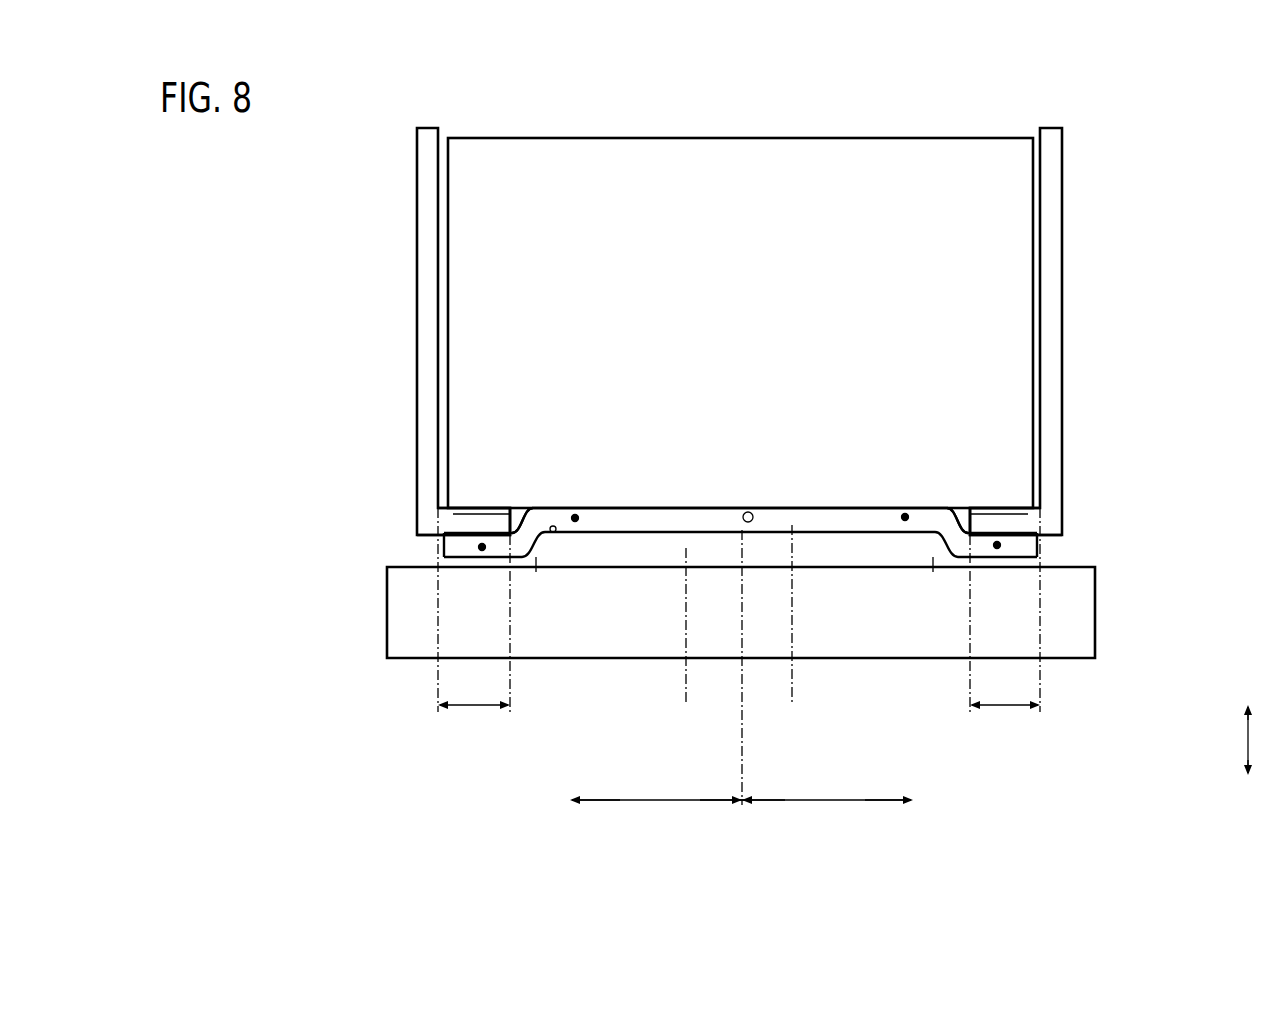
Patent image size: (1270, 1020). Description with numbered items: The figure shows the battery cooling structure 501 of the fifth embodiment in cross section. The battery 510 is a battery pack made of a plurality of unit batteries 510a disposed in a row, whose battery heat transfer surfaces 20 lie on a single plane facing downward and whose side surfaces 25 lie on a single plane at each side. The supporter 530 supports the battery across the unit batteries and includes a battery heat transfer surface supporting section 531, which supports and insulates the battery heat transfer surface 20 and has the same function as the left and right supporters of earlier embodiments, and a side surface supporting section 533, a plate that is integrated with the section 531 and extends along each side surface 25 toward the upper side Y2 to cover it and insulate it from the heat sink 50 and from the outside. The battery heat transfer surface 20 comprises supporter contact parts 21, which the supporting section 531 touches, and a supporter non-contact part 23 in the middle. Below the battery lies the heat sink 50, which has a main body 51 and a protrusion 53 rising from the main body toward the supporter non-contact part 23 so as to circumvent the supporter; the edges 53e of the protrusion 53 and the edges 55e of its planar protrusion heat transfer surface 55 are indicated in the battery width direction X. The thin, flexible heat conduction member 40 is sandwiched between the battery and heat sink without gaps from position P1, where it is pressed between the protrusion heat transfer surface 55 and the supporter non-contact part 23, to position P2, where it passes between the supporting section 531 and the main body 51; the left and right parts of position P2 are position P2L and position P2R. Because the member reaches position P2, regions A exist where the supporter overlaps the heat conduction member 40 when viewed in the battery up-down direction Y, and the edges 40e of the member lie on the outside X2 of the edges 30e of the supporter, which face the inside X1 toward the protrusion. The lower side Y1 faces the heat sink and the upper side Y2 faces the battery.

The battery cooling structure 501 is at (392, 148).
The battery 510 is at (631, 323).
The unit battery 510a is at (465, 228).
The supporter 530 is at (741, 344).
The side surface supporting section 533 is at (427, 378).
The battery heat transfer surface supporting section 531 is at (445, 528).
The side surface 25 is at (430, 300).
The battery heat transfer surface 20 is at (742, 469).
The supporter contact part 21 is at (478, 518).
The supporter non-contact part 23 is at (741, 508).
The heat conduction member 40 is at (625, 517).
The edge of heat conduction member 40e is at (444, 556).
The edge of supporter 30e is at (525, 508).
The position P1 is at (576, 514).
The position P2 is at (742, 483).
The position P2L is at (482, 543).
The position P2R is at (997, 541).
The heat sink 50 is at (400, 657).
The main body 51 is at (378, 615).
The protrusion 53 is at (739, 640).
The edge of protrusion 53e is at (536, 574).
The protrusion heat transfer surface 55 is at (738, 629).
The edge of protrusion heat transfer surface 55e is at (554, 534).
The region A is at (739, 621).
The battery width direction X is at (741, 680).
The inside X1 is at (742, 815).
The outside X2 is at (741, 815).
The battery up-down direction Y is at (1257, 740).
The lower side Y1 is at (1247, 786).
The upper side Y2 is at (1247, 696).